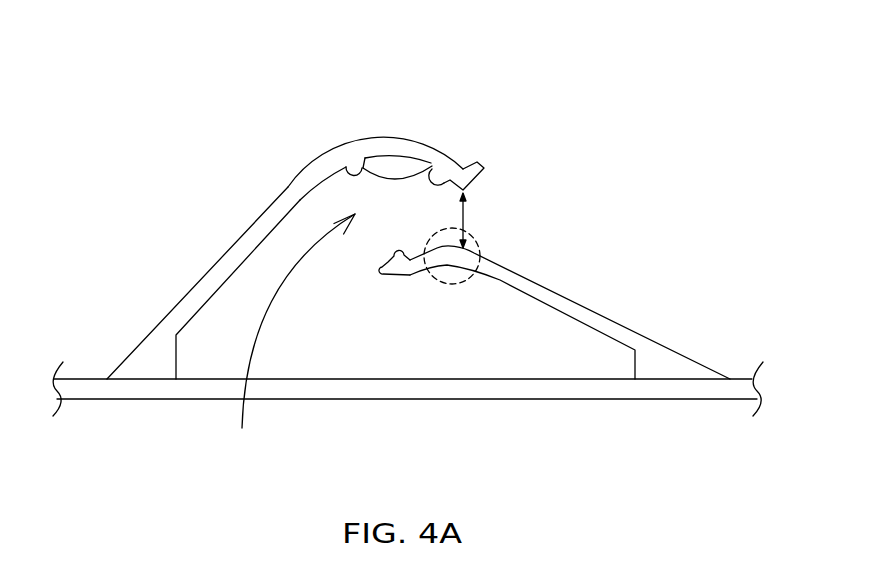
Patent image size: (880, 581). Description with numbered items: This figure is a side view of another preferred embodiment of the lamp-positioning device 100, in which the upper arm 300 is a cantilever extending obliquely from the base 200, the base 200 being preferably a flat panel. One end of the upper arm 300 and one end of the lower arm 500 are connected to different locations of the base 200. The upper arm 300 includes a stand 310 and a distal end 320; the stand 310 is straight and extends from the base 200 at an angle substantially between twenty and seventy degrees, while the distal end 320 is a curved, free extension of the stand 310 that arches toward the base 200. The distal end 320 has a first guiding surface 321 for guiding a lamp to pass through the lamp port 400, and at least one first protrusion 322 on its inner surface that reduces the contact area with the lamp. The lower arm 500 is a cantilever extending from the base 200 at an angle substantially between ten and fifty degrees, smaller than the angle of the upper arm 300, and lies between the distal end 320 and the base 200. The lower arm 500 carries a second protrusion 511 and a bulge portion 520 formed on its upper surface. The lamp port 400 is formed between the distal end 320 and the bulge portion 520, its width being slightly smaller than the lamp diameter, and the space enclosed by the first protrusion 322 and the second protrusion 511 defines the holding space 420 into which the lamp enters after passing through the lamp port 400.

The lamp-positioning device 100 is at (149, 62).
The base 200 is at (623, 387).
The upper arm 300 is at (356, 44).
The stand 310 is at (248, 250).
The distal end 320 is at (393, 147).
The first guiding surface 321 is at (477, 160).
The first protrusion 322 is at (445, 170).
The lamp port 400 is at (444, 220).
The holding space 420 is at (288, 335).
The lower arm 500 is at (524, 327).
The second protrusion 511 is at (397, 263).
The bulge portion 520 is at (477, 237).